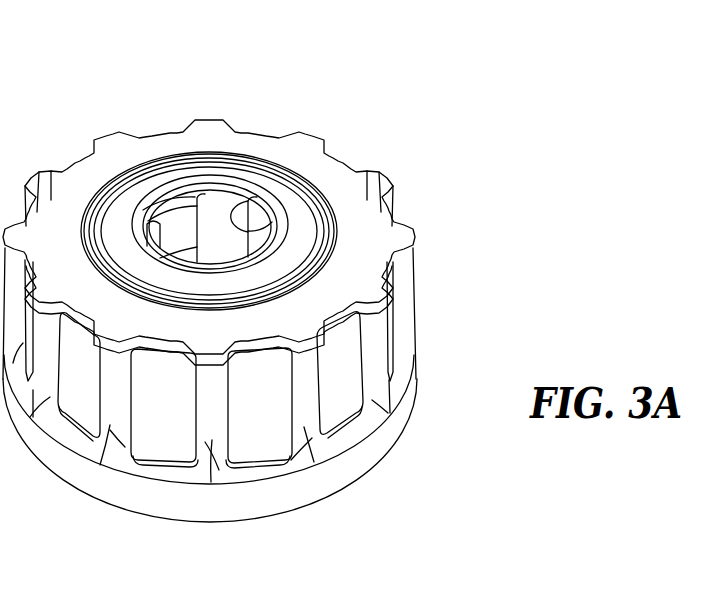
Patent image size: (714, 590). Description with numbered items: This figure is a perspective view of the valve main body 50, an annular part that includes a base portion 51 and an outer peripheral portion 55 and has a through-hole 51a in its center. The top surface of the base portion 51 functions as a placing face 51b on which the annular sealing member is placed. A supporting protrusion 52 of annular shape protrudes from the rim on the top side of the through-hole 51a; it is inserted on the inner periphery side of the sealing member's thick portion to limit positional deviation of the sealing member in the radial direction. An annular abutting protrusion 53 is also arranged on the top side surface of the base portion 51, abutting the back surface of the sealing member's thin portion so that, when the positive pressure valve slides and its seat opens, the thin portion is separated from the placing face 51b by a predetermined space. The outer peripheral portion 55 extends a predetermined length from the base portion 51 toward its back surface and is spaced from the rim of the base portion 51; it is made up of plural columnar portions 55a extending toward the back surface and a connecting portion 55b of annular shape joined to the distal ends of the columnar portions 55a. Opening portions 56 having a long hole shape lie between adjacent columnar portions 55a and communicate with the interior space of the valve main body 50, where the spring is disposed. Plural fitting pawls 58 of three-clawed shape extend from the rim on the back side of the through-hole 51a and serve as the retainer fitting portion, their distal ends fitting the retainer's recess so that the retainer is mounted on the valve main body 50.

The valve main body 50 is at (231, 196).
The base portion 51 is at (338, 152).
The through-hole 51a is at (226, 185).
The placing face 51b is at (153, 143).
The supporting protrusion 52 is at (260, 182).
The abutting protrusion 53 is at (113, 183).
The fitting pawls 58 is at (180, 220).
The outer peripheral portion 55 is at (264, 402).
The columnar portions 55a is at (106, 440).
The connecting portion 55b is at (370, 457).
The opening portions 56 is at (163, 447).